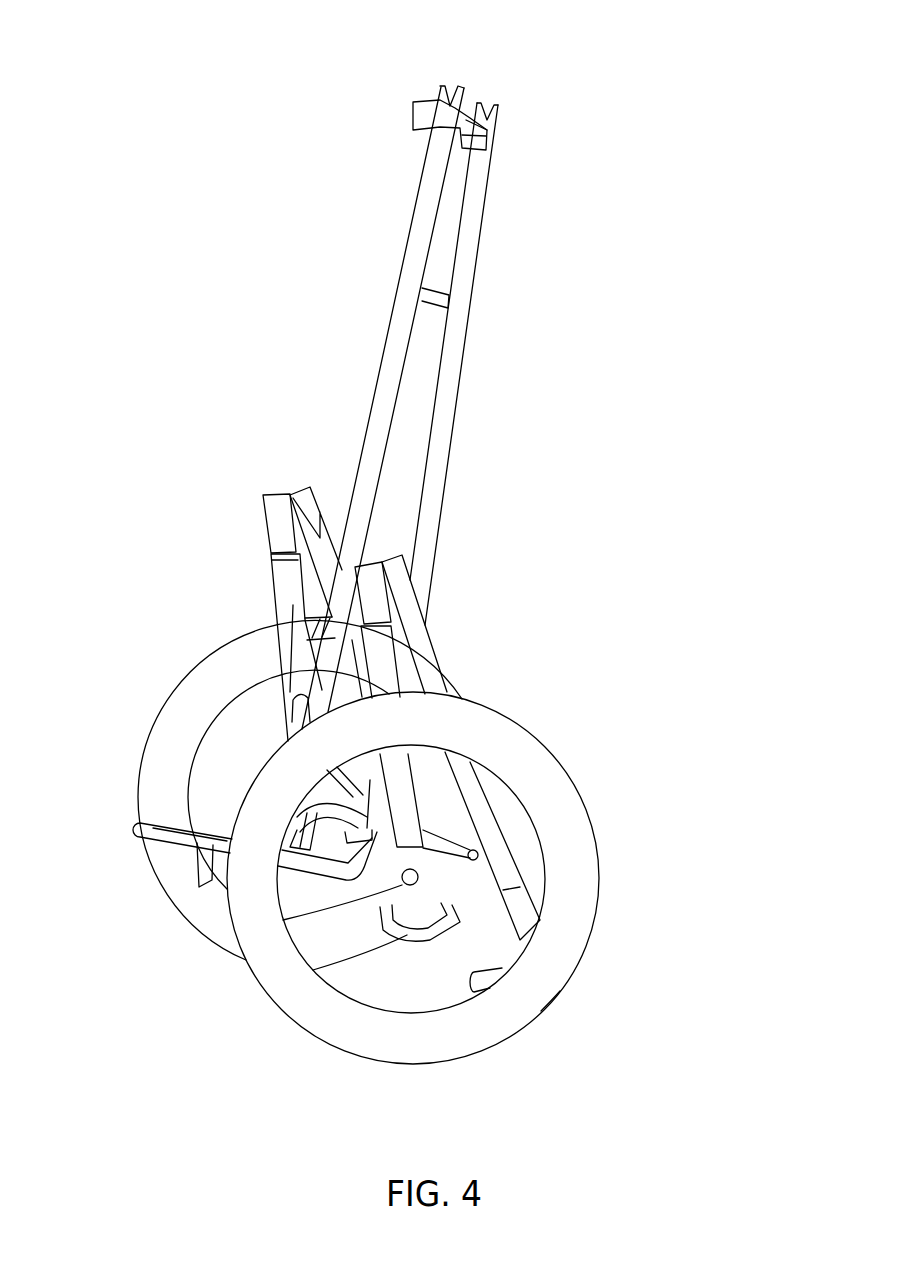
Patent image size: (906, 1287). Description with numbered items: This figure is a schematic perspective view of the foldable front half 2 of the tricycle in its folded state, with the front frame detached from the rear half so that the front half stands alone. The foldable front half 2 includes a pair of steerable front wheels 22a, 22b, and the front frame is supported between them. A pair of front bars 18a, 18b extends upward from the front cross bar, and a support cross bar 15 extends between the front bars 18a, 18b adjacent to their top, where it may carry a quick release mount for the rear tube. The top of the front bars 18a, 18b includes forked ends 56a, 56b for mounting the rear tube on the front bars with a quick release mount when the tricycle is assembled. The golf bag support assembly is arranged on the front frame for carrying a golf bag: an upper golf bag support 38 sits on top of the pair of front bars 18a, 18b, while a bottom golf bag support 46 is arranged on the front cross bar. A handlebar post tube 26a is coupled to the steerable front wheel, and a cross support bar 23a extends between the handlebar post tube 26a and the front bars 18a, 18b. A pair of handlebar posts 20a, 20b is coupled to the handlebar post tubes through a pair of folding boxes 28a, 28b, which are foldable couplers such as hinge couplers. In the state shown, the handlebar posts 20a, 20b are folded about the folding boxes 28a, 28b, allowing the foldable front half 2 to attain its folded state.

The foldable front half 2 is at (647, 1038).
The support cross bar 15 is at (425, 283).
The front bar 18a is at (402, 350).
The front bar 18b is at (463, 284).
The handlebar post 20a is at (318, 496).
The handlebar post 20b is at (422, 635).
The steerable front wheel 22a is at (167, 732).
The steerable front wheel 22b is at (540, 770).
The cross support bar 23a is at (308, 630).
The handlebar post tube 26a is at (281, 591).
The folding box 28a is at (292, 496).
The folding box 28b is at (380, 560).
The upper golf bag support 38 is at (414, 101).
The bottom golf bag support 46 is at (137, 829).
The forked end 56a is at (459, 86).
The forked end 56b is at (497, 102).